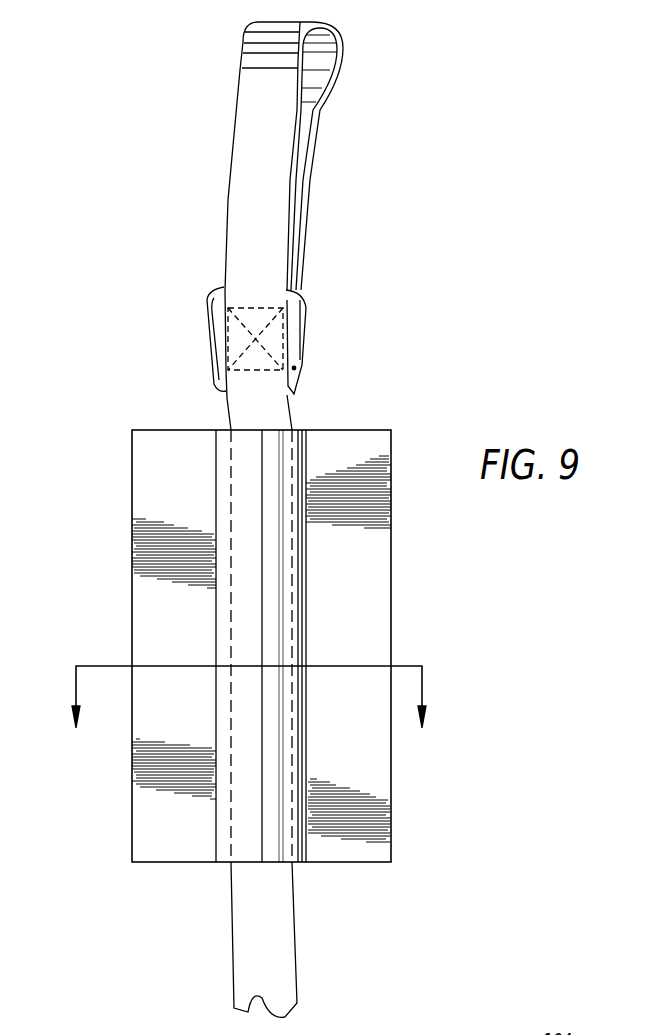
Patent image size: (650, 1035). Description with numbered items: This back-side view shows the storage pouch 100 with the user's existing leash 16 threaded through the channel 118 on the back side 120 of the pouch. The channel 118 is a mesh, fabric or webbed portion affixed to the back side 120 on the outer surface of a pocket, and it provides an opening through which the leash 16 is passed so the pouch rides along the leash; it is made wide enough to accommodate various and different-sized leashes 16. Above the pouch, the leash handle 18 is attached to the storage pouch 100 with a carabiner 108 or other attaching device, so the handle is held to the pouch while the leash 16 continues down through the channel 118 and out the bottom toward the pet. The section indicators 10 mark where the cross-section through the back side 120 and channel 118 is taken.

The storage pouch 100 is at (156, 416).
The leash handle 18 is at (305, 178).
The carabiner 108 is at (300, 332).
The channel 118 is at (305, 455).
The back side 120 is at (363, 600).
The leash 16 is at (272, 925).
The section line 10 is at (247, 716).